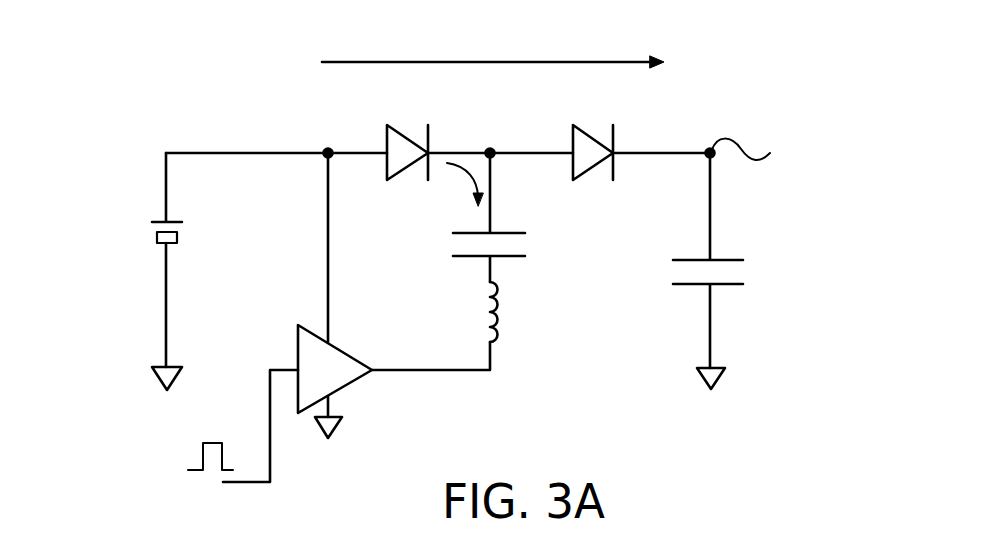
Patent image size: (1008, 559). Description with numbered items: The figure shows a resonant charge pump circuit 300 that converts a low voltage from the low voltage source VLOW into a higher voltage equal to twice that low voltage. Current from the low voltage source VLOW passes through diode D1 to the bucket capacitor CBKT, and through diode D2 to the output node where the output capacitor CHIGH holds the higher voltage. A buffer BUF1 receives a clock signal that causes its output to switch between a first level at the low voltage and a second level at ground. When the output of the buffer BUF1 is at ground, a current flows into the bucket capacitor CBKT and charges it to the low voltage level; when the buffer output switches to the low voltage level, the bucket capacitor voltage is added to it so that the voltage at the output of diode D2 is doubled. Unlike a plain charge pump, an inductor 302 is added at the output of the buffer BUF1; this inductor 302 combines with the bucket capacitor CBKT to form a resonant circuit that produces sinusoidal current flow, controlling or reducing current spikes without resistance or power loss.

The resonant charge pump circuit 300 is at (814, 56).
The inductor L_BKT 302 is at (513, 339).
The diode D1 is at (407, 135).
The diode D2 is at (593, 135).
The buffer BUF1 is at (359, 381).
The bucket capacitor CBKT is at (515, 217).
The output capacitor CHIGH is at (746, 271).
The low voltage source VLOW is at (132, 271).